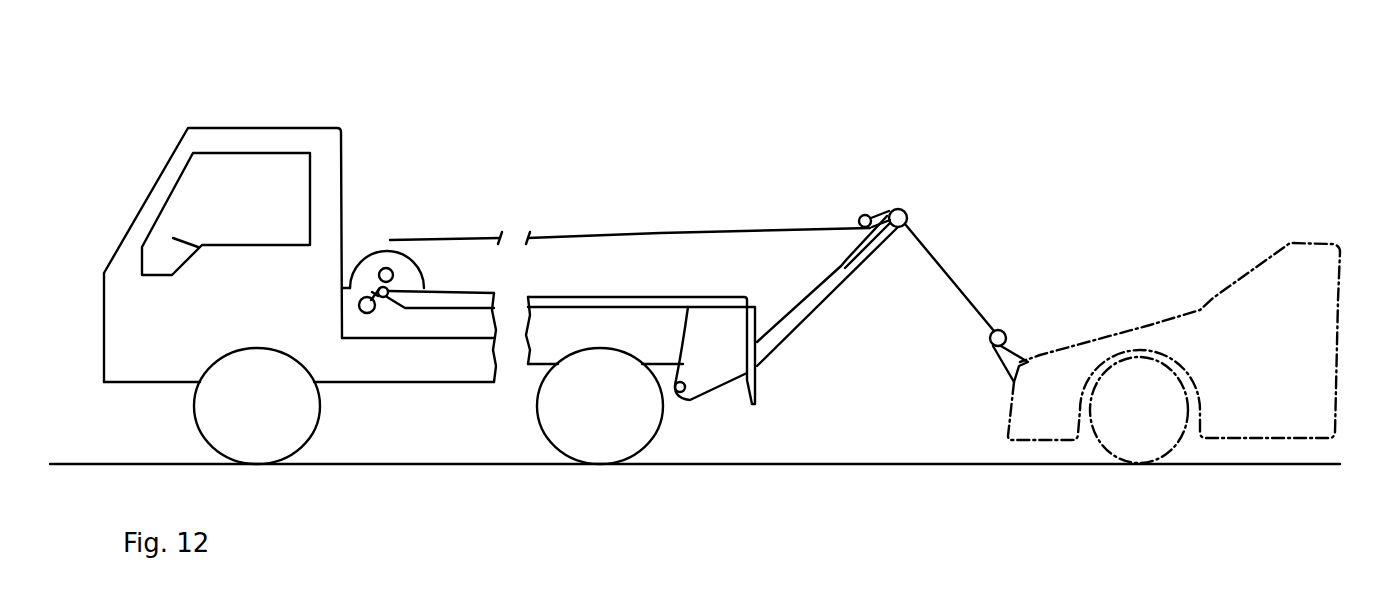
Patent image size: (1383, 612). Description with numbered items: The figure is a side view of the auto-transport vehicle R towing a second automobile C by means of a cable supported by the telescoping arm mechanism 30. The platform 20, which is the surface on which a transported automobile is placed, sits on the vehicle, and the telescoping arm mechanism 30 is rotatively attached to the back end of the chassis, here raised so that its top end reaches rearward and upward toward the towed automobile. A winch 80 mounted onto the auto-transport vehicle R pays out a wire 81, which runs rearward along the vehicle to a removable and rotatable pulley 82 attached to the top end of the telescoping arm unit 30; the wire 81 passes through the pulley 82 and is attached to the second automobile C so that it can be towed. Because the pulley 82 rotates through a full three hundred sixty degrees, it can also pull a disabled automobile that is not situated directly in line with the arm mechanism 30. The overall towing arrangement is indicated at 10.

The towing apparatus 10 is at (838, 337).
The platform 20 is at (463, 298).
The telescoping arm mechanism 30 is at (810, 303).
The winch 80 is at (385, 252).
The wire 81 is at (660, 233).
The rotatable pulley 82 is at (903, 212).
The auto-transport vehicle R is at (255, 145).
The towed car C is at (1270, 292).